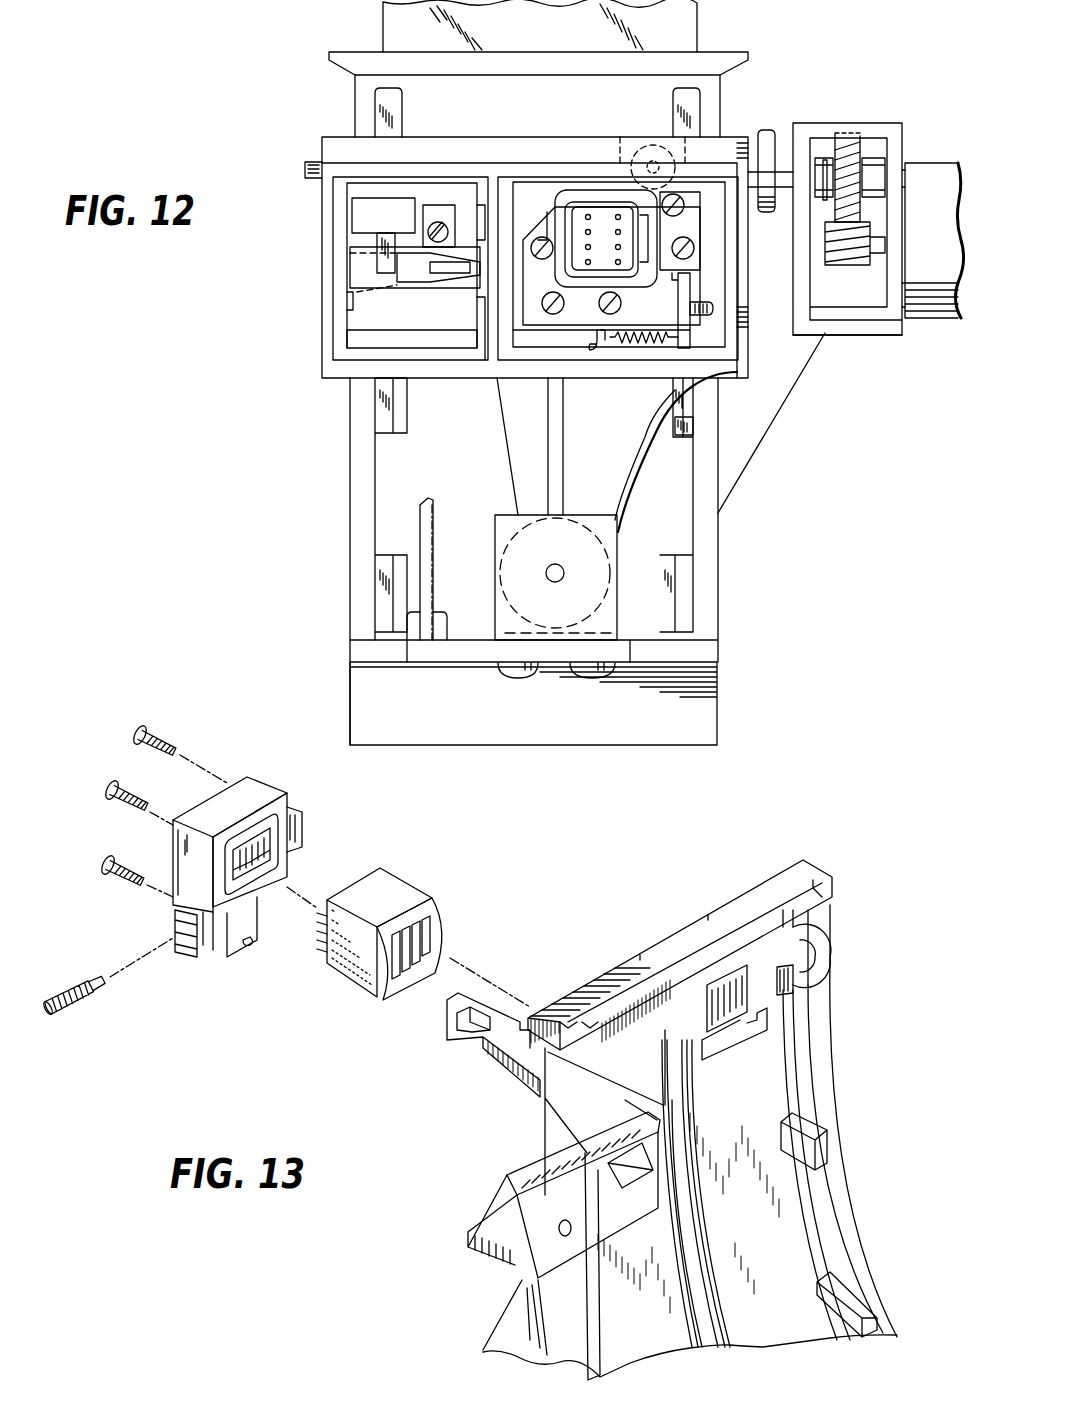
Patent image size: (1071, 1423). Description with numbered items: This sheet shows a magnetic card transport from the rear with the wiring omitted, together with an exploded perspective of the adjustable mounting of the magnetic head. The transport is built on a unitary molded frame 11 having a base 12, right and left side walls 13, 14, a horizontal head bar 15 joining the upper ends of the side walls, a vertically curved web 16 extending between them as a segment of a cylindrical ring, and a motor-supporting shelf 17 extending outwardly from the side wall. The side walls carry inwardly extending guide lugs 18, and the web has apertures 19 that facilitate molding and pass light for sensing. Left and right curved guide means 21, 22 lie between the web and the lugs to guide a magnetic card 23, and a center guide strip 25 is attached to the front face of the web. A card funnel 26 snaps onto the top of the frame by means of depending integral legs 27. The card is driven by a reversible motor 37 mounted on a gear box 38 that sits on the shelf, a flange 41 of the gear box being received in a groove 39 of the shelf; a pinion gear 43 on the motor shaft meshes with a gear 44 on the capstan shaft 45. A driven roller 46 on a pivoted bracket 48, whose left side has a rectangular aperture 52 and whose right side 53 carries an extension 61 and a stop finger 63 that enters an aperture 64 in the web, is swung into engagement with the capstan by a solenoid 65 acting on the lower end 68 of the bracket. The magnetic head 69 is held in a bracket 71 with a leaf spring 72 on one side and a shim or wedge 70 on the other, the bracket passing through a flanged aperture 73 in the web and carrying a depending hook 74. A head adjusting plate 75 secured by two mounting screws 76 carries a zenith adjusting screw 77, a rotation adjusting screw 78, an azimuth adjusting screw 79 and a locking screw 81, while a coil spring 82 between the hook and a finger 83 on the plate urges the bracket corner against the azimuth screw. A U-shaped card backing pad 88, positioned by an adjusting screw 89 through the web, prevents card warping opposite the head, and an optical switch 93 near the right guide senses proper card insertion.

In FIG. 12, the frame 11 is at (345, 478).
In FIG. 13, the frame 11 is at (497, 1318).
In FIG. 12, the base 12 is at (703, 652).
In FIG. 12, the right side wall 13 is at (707, 580).
In FIG. 13, the right side wall 13 is at (565, 1132).
In FIG. 12, the left side wall 14 is at (358, 527).
In FIG. 13, the left side wall 14 is at (855, 1220).
In FIG. 13, the head bar 15 is at (762, 895).
In FIG. 12, the curved web 16 is at (441, 456).
In FIG. 13, the curved web 16 is at (732, 1209).
In FIG. 12, the motor-supporting shelf 17 is at (867, 327).
In FIG. 13, the motor-supporting shelf 17 is at (470, 1247).
In FIG. 13, the guide lugs 18 is at (822, 1145).
In FIG. 13, the apertures 19 is at (840, 1305).
In FIG. 12, the left curved guide means 21 is at (687, 100).
In FIG. 12, the right curved guide means 22 is at (387, 100).
In FIG. 12, the magnetic card 23 is at (540, 34).
In FIG. 13, the center guide strip 25 is at (697, 1290).
In FIG. 12, the card funnel 26 is at (385, 72).
In FIG. 12, the integral legs 27 is at (362, 115).
In FIG. 12, the reversible motor 37 is at (933, 165).
In FIG. 12, the gear box 38 is at (893, 130).
In FIG. 12, the groove 39 is at (797, 333).
In FIG. 12, the flange 41 is at (807, 323).
In FIG. 12, the pinion gear 43 is at (855, 262).
In FIG. 12, the gear 44 is at (848, 160).
In FIG. 12, the capstan shaft 45 is at (783, 180).
In FIG. 12, the driven roller 46 is at (770, 130).
In FIG. 12, the bracket 48 is at (653, 438).
In FIG. 12, the rectangular aperture 52 is at (747, 267).
In FIG. 12, the right side of bracket 53 is at (325, 270).
In FIG. 12, the extension 61 is at (412, 272).
In FIG. 12, the finger 63 is at (455, 274).
In FIG. 12, the aperture 64 is at (427, 290).
In FIG. 13, the aperture 64 is at (752, 1038).
In FIG. 12, the solenoid 65 is at (510, 618).
In FIG. 12, the lower end of bracket 68 is at (505, 490).
In FIG. 12, the magnetic head 69 is at (605, 220).
In FIG. 13, the magnetic head 69 is at (408, 892).
In FIG. 12, the shim or wedge 70 is at (647, 238).
In FIG. 12, the bracket 71 is at (587, 197).
In FIG. 13, the bracket 71 is at (258, 780).
In FIG. 12, the leaf spring 72 is at (562, 220).
In FIG. 13, the flanged aperture 73 is at (630, 1040).
In FIG. 12, the hook 74 is at (597, 350).
In FIG. 13, the hook 74 is at (253, 950).
In FIG. 12, the head adjusting plate 75 is at (648, 314).
In FIG. 12, the mounting screws 76 is at (690, 248).
In FIG. 12, the zenith adjusting screw 77 is at (537, 240).
In FIG. 13, the zenith adjusting screw 77 is at (170, 740).
In FIG. 12, the rotation adjusting screw 78 is at (590, 305).
In FIG. 13, the rotation adjusting screw 78 is at (125, 880).
In FIG. 12, the azimuth adjusting screw 79 is at (700, 316).
In FIG. 13, the azimuth adjusting screw 79 is at (90, 1000).
In FIG. 12, the locking screw 81 is at (682, 205).
In FIG. 13, the locking screw 81 is at (110, 785).
In FIG. 12, the coil spring 82 is at (628, 345).
In FIG. 12, the finger 83 is at (687, 350).
In FIG. 12, the card backing pad 88 is at (432, 213).
In FIG. 12, the adjusting screw 89 is at (425, 228).
In FIG. 12, the optical switch 93 is at (393, 203).